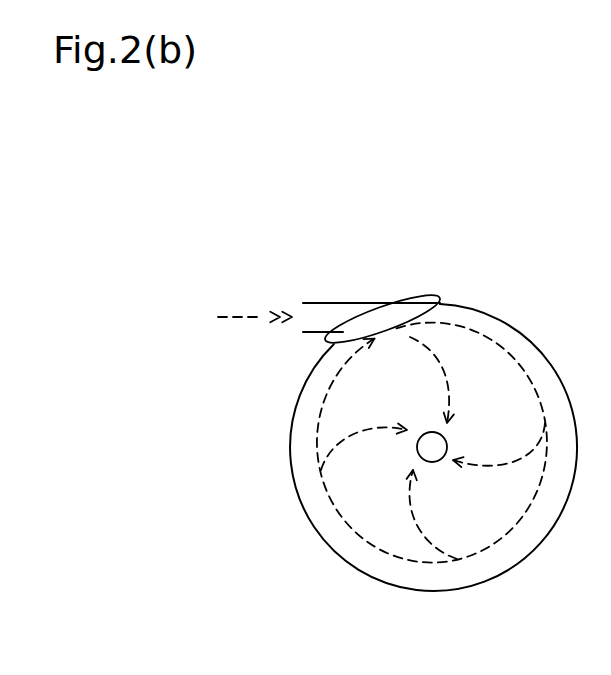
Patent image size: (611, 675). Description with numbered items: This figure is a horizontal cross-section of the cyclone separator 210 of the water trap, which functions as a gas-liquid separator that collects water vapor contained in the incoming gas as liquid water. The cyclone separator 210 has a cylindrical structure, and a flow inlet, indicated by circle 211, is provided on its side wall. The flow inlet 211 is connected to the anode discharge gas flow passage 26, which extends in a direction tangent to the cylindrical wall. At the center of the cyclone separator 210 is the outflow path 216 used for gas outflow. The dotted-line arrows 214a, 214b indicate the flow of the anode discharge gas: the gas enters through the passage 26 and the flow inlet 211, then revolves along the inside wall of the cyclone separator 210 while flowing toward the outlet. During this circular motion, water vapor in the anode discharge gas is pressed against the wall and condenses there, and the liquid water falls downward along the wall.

The anode discharge gas flow passage 26 is at (330, 303).
The cyclone separator 210 is at (308, 522).
The flow inlet 211 is at (411, 292).
The arrow indicating anode discharge gas flow 214a is at (240, 316).
The arrow indicating anode discharge gas flow 214b is at (533, 387).
The outflow path 216 is at (447, 447).